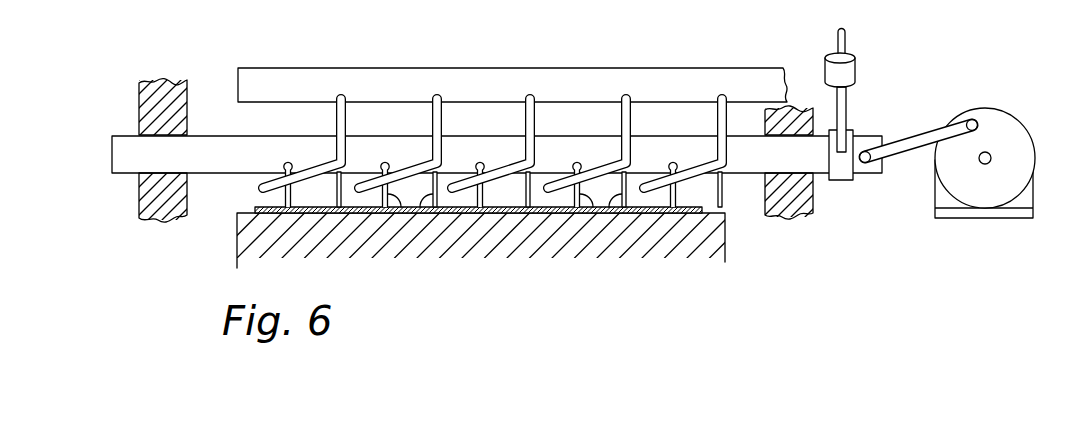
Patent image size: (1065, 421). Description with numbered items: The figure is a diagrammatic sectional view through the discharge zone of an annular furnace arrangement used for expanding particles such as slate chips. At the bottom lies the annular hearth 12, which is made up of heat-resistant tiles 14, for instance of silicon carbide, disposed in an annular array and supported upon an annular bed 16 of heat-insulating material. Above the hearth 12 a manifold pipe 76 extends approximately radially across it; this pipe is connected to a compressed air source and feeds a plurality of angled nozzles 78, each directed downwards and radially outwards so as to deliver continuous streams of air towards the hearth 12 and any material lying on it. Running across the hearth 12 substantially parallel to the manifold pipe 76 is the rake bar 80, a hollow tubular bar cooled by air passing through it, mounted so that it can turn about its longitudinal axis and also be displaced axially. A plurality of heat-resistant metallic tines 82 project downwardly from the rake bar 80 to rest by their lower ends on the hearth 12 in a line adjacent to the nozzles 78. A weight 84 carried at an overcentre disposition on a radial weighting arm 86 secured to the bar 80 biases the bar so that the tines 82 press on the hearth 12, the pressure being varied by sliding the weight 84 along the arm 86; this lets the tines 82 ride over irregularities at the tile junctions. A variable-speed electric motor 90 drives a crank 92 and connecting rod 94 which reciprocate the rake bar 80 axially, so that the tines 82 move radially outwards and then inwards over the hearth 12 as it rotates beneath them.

The annular hearth 12 is at (242, 192).
The heat-resistant tiles 14 is at (700, 208).
The annular bed of heat-insulating material 16 is at (678, 235).
The manifold pipe 76 is at (598, 78).
The angled nozzles 78 is at (347, 121).
The rake bar 80 is at (118, 149).
The tines 82 is at (424, 196).
The weight 84 is at (847, 70).
The radial weighting arm 86 is at (843, 108).
The variable-speed electric motor 90 is at (935, 198).
The crank 92 is at (998, 122).
The connecting rod 94 is at (927, 130).